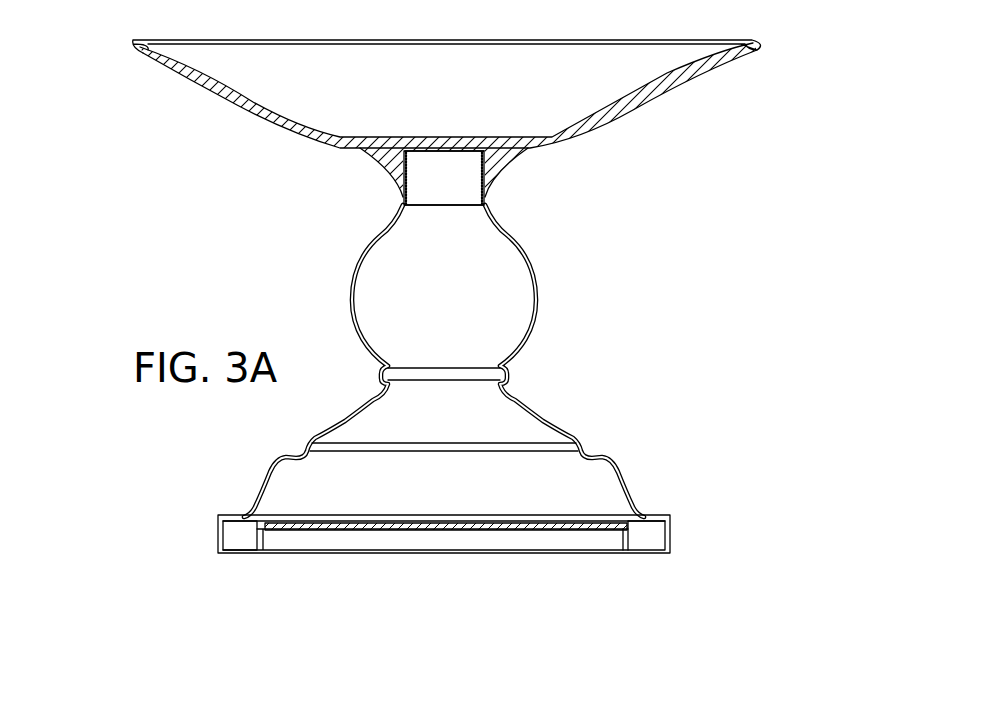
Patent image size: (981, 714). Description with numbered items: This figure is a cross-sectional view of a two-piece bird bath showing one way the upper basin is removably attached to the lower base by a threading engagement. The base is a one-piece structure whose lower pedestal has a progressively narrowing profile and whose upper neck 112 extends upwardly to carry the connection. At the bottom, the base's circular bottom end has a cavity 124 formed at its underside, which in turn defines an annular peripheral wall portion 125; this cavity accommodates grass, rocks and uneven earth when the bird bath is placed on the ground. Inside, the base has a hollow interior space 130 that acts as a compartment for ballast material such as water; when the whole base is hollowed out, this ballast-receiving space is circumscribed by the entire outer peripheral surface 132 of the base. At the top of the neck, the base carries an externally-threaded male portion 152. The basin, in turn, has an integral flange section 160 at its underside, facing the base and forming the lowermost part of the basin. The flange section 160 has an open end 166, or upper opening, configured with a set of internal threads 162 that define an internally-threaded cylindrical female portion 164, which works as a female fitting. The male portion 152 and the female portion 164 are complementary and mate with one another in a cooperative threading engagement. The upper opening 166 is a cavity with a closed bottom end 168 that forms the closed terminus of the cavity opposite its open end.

The neck 112 is at (553, 302).
The cavity 124 is at (407, 543).
The annular peripheral wall portion 125 is at (645, 555).
The hollow interior space 130 is at (492, 470).
The outer peripheral surface 132 is at (358, 277).
The externally-threaded male portion 152 is at (402, 160).
The flange section 160 is at (372, 172).
The internal threads 162 is at (417, 179).
The internally-threaded cylindrical female portion 164 is at (456, 183).
The open end 166 is at (443, 194).
The closed bottom end 168 is at (449, 157).